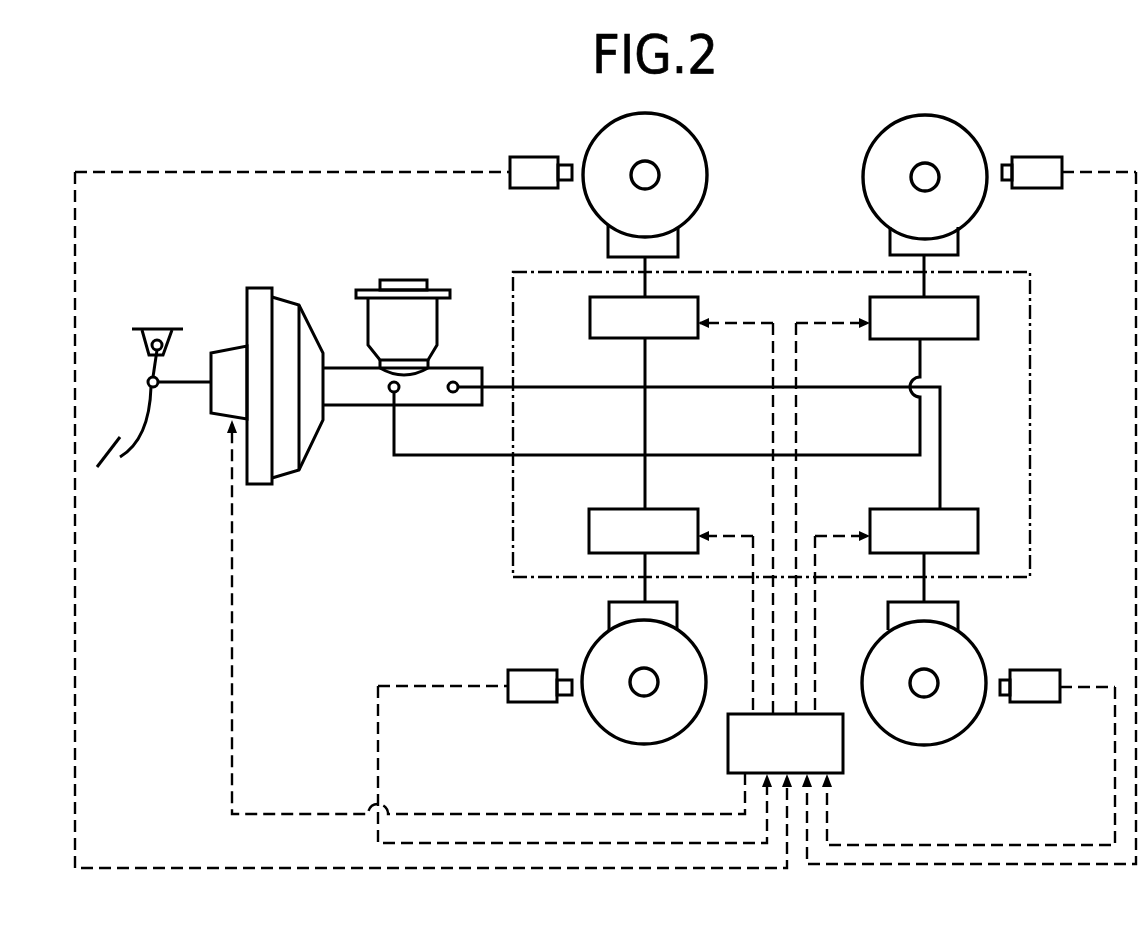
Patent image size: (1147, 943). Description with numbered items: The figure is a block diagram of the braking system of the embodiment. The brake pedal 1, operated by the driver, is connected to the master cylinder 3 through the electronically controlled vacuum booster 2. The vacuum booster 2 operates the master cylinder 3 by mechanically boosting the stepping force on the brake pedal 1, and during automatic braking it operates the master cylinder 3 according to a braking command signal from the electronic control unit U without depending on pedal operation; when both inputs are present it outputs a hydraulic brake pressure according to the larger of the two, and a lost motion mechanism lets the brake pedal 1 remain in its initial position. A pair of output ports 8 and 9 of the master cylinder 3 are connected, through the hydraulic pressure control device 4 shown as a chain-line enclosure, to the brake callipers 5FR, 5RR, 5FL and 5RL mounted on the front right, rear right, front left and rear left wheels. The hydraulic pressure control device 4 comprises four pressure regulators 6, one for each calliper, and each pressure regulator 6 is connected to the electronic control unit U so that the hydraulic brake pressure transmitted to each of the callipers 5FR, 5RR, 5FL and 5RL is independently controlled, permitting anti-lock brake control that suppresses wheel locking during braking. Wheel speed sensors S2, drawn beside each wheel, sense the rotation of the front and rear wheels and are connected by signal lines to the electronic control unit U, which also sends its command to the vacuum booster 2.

The brake pedal 1 is at (116, 440).
The electronically controlled vacuum booster 2 is at (282, 310).
The master cylinder 3 is at (463, 367).
The hydraulic pressure control device 4 is at (1030, 373).
The brake calliper 5FR is at (667, 245).
The brake calliper 5RR is at (947, 245).
The brake calliper 5FL is at (667, 615).
The brake calliper 5RL is at (937, 613).
The pressure regulator 6 is at (654, 334).
The output port 8 is at (457, 392).
The output port 9 is at (388, 392).
The electronic control unit U is at (799, 758).
The wheel speed sensor S2 is at (1048, 725).